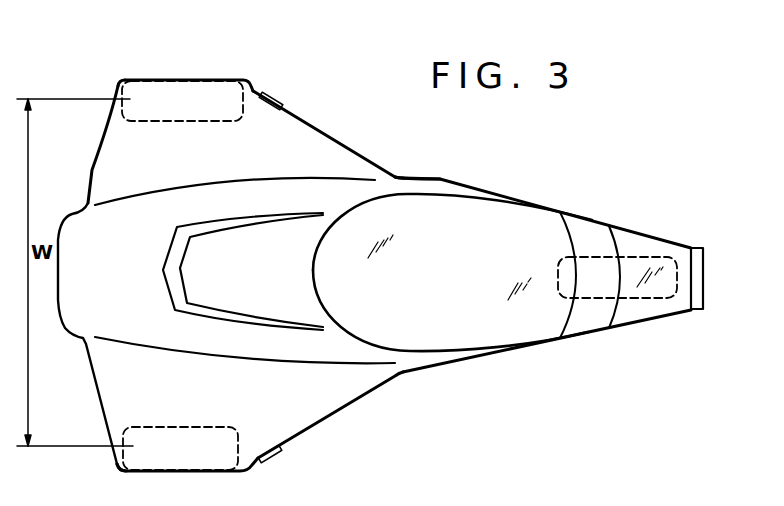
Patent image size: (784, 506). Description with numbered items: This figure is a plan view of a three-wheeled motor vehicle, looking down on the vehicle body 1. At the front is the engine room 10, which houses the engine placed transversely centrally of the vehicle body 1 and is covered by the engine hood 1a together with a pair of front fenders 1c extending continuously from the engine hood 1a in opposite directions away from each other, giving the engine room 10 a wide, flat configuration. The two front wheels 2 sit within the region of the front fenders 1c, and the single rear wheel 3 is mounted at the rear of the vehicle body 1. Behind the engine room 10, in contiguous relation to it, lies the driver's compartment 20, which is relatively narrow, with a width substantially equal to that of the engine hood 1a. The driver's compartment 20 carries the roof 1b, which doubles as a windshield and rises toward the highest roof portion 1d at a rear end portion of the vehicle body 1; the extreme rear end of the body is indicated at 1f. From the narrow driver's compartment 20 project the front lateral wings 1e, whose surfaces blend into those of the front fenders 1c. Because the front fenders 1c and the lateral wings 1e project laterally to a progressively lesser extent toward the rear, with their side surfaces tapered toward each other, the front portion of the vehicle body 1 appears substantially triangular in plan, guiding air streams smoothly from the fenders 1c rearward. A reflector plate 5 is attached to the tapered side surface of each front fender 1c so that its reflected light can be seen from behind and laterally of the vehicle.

The vehicle body 1 is at (352, 113).
The engine hood 1a is at (133, 285).
The roof 1b is at (462, 225).
The front fender 1c is at (147, 100).
The highest roof portion 1d is at (545, 265).
The front lateral wing 1e is at (298, 138).
The tail end 1f is at (695, 253).
The front wheel 2 is at (168, 84).
The rear wheel 3 is at (640, 265).
The reflector plate 5 is at (272, 462).
The engine room 10 is at (249, 78).
The driver's compartment 20 is at (437, 175).